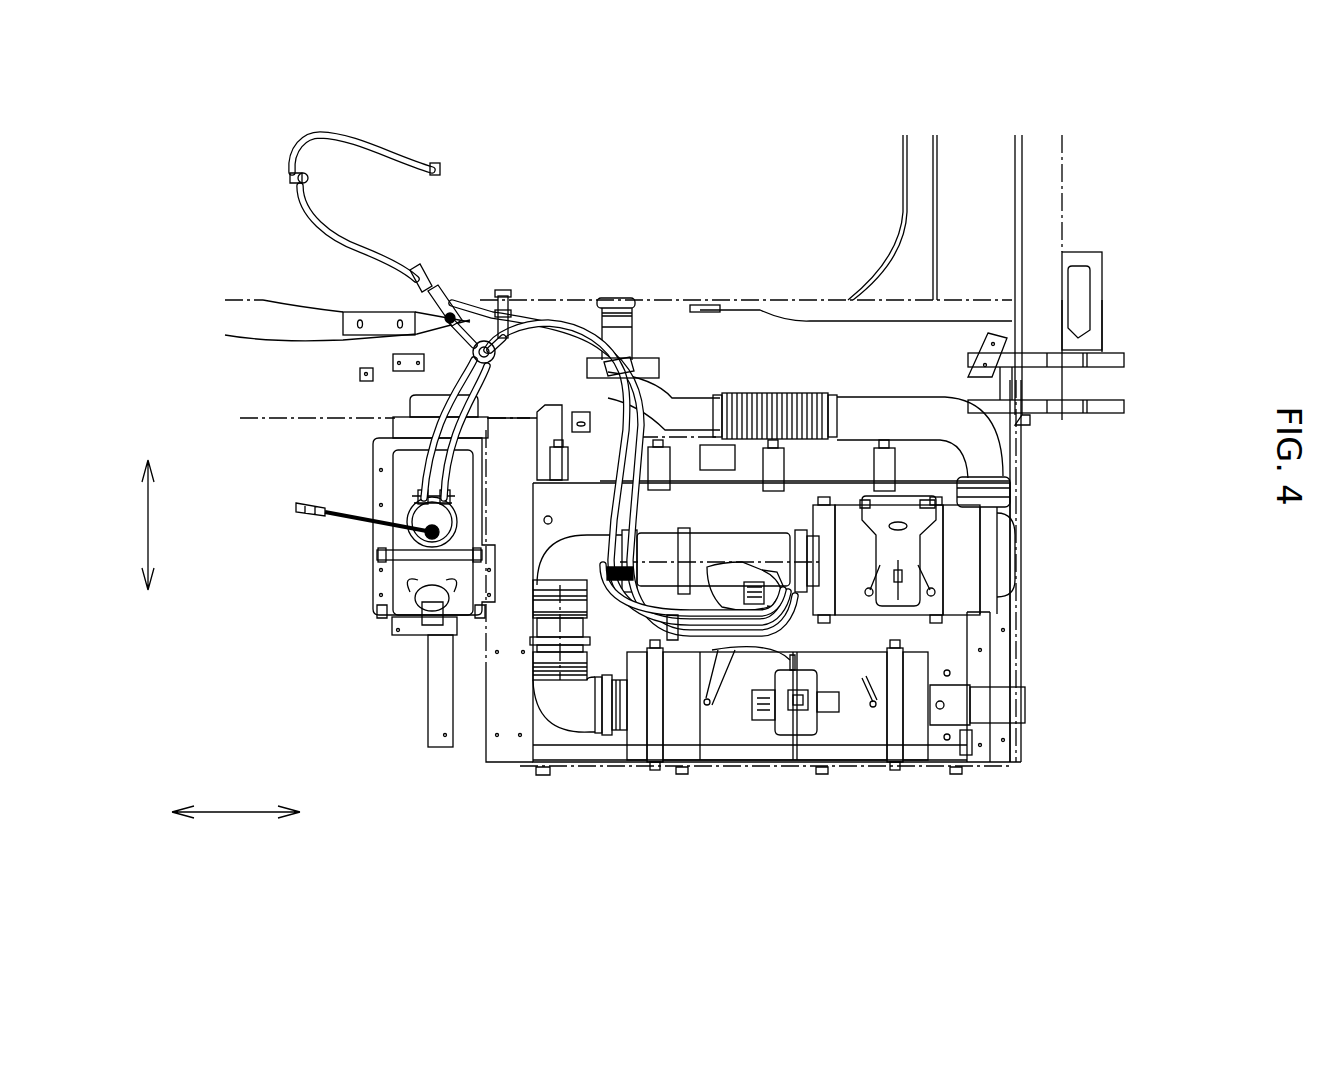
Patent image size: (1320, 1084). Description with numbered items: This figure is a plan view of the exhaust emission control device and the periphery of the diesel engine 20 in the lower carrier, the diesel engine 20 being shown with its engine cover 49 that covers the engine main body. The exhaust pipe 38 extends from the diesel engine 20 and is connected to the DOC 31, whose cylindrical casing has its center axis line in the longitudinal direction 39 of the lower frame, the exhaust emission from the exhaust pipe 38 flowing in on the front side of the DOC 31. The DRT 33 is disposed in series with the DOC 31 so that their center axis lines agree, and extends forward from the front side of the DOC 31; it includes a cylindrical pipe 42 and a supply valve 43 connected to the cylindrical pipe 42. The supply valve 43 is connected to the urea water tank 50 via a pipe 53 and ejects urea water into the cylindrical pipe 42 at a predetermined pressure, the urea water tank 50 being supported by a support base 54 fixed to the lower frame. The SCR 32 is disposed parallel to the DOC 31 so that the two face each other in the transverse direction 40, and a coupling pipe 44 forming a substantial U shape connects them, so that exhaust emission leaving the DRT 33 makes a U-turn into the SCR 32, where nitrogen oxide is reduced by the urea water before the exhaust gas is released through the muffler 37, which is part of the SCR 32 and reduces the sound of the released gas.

The diesel engine 20 is at (586, 166).
The diesel oxidation catalyst (DOC) 31 is at (1024, 608).
The selective catalyst reduction (SCR) 32 is at (873, 780).
The decompression reactor tube (DRT) 33 is at (730, 505).
The muffler 37 is at (1028, 704).
The exhaust pipe 38 is at (990, 435).
The longitudinal direction 39 is at (243, 812).
The transverse direction 40 is at (150, 521).
The cylindrical pipe 42 is at (757, 522).
The supply valve 43 is at (784, 582).
The coupling pipe 44 is at (548, 712).
The engine cover 49 is at (1024, 188).
The urea water tank 50 is at (410, 575).
The pipe 53 is at (745, 638).
The support base 54 is at (380, 467).